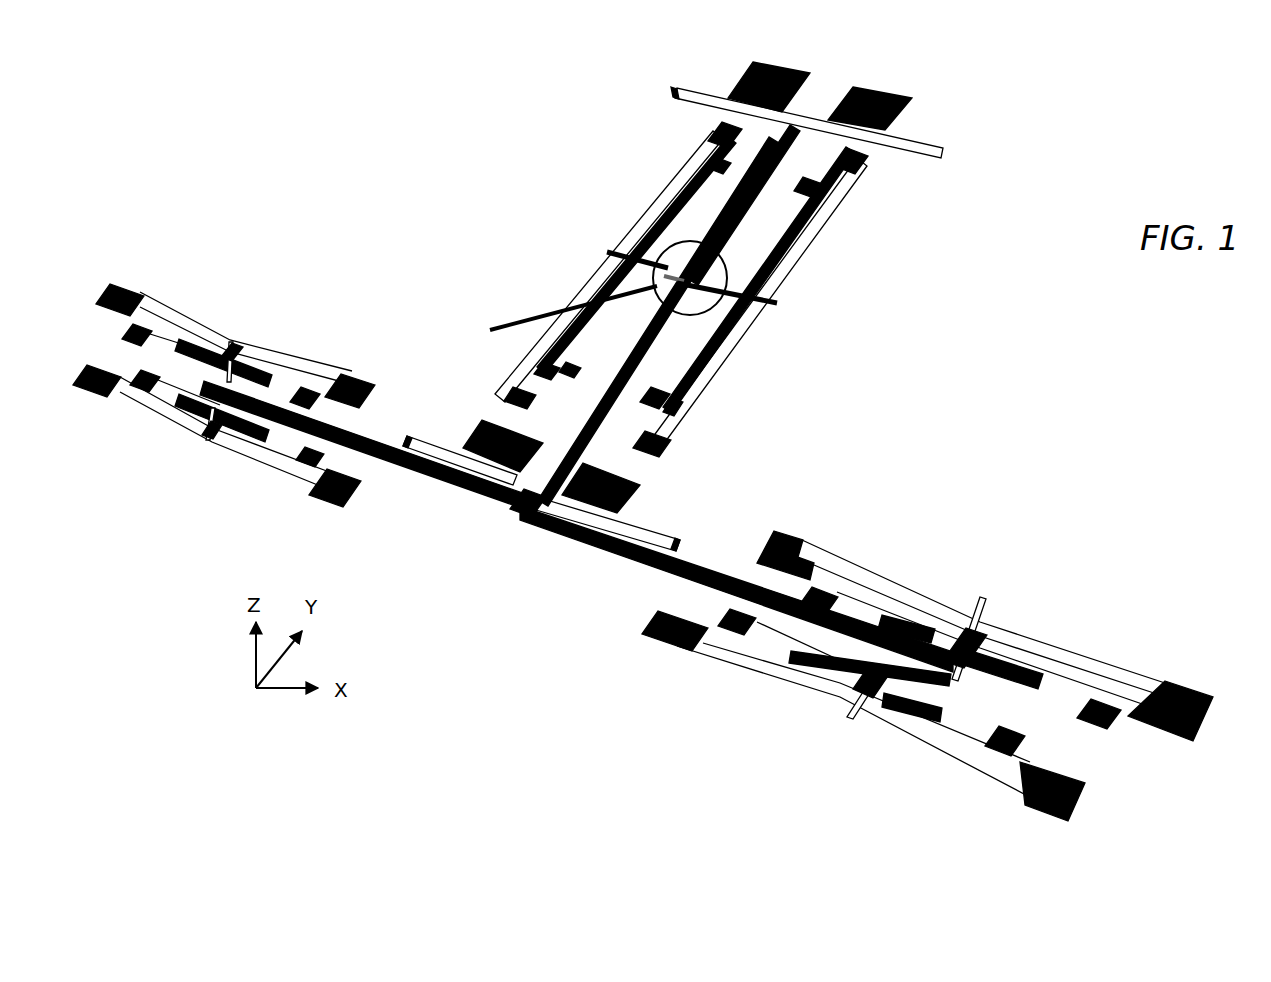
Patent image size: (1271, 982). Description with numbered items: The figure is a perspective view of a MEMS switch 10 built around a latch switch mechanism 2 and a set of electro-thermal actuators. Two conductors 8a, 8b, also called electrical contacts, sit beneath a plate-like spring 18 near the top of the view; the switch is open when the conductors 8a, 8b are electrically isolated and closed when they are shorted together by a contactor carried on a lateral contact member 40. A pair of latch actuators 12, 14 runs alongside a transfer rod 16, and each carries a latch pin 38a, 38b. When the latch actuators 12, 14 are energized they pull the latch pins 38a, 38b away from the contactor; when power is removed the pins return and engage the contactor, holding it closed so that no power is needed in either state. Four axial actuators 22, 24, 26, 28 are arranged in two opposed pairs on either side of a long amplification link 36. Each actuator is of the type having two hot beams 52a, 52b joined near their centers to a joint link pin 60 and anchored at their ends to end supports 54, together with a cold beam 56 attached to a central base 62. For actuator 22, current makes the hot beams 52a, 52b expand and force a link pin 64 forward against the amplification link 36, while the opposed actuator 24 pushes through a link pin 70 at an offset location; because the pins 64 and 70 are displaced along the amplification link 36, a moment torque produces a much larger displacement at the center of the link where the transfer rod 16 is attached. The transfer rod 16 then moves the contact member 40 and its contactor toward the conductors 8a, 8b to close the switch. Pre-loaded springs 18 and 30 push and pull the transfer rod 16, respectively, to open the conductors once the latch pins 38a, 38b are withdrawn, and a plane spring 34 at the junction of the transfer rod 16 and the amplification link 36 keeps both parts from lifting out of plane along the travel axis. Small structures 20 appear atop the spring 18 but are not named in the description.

The latch switch mechanism 2 is at (561, 319).
The conductor 8a is at (772, 222).
The conductor 8b is at (728, 202).
The MEMS switch 10 is at (910, 361).
The latch actuator 12 is at (828, 255).
The latch actuator 14 is at (630, 192).
The transfer rod 16 is at (583, 447).
The spring 18 is at (928, 141).
The bonding pads 20 is at (791, 66).
The axial actuator 22 is at (932, 552).
The axial actuator 24 is at (817, 728).
The axial actuator 26 is at (267, 334).
The axial actuator 28 is at (203, 467).
The spring 30 is at (432, 436).
The plane spring 34 is at (515, 528).
The amplification link 36 is at (633, 561).
The latch pin 38a is at (732, 276).
The latch pin 38b is at (656, 273).
The lateral contact member 40 is at (696, 290).
The hot beam 52a is at (1040, 641).
The hot beam 52b is at (1085, 666).
The end support 54 is at (1200, 689).
The cold beam 56 is at (1063, 690).
The joint link pin 60 is at (967, 629).
The central base 62 is at (1005, 680).
The link pin 64 is at (941, 673).
The link pin 70 is at (882, 664).